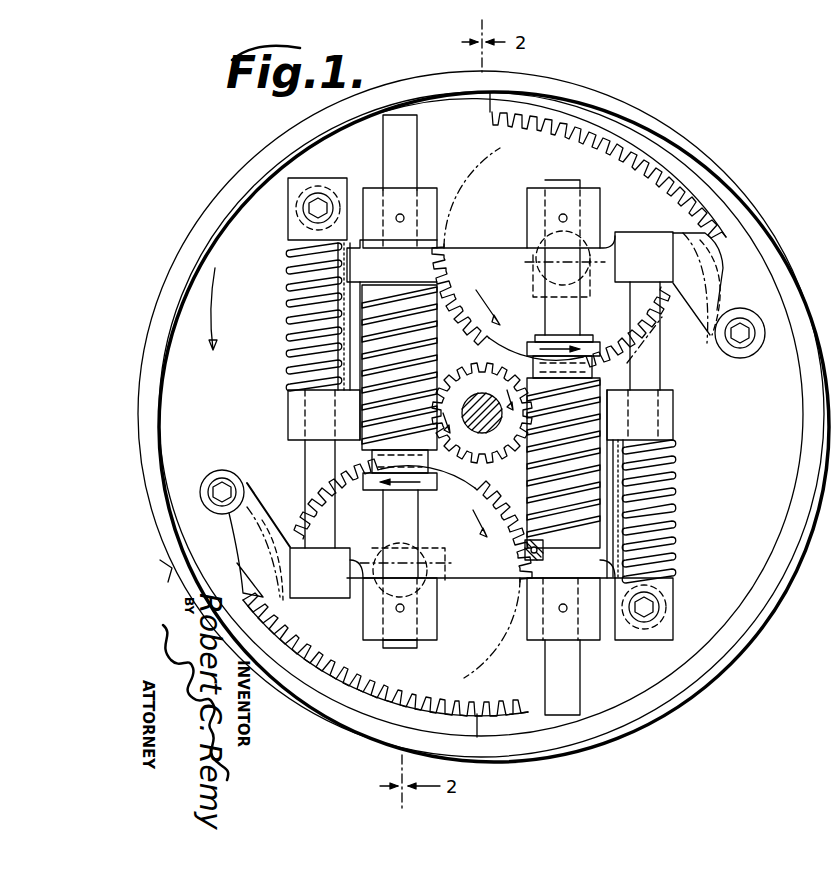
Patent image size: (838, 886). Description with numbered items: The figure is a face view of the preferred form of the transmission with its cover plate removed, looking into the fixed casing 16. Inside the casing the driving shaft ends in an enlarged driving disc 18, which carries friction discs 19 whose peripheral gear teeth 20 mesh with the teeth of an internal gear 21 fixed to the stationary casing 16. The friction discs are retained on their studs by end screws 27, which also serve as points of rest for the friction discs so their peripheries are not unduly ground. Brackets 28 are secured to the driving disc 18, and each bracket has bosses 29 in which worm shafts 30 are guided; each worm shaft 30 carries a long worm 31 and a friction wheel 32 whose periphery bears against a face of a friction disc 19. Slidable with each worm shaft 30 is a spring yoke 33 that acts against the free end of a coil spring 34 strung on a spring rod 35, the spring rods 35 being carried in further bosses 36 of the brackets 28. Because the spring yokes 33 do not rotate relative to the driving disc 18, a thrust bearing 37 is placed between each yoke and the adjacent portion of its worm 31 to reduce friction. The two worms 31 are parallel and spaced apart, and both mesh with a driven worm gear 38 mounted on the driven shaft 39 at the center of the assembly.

The fixed casing 16 is at (764, 598).
The driving disc 18 is at (242, 238).
The friction disc 19 is at (623, 333).
The peripheral gear teeth 20 is at (520, 147).
The internal gear 21 is at (690, 212).
The end screw 27 is at (428, 560).
The bracket 28 is at (480, 409).
The boss 29 is at (425, 196).
The worm shaft 30 is at (435, 512).
The long worm 31 is at (437, 343).
The friction wheel 32 is at (377, 485).
The spring yoke 33 is at (293, 413).
The coil spring 34 is at (290, 338).
The spring rod 35 is at (312, 462).
The boss 36 is at (340, 183).
The thrust bearing 37 is at (523, 558).
The driven worm gear 38 is at (482, 413).
The driven shaft 39 is at (484, 421).